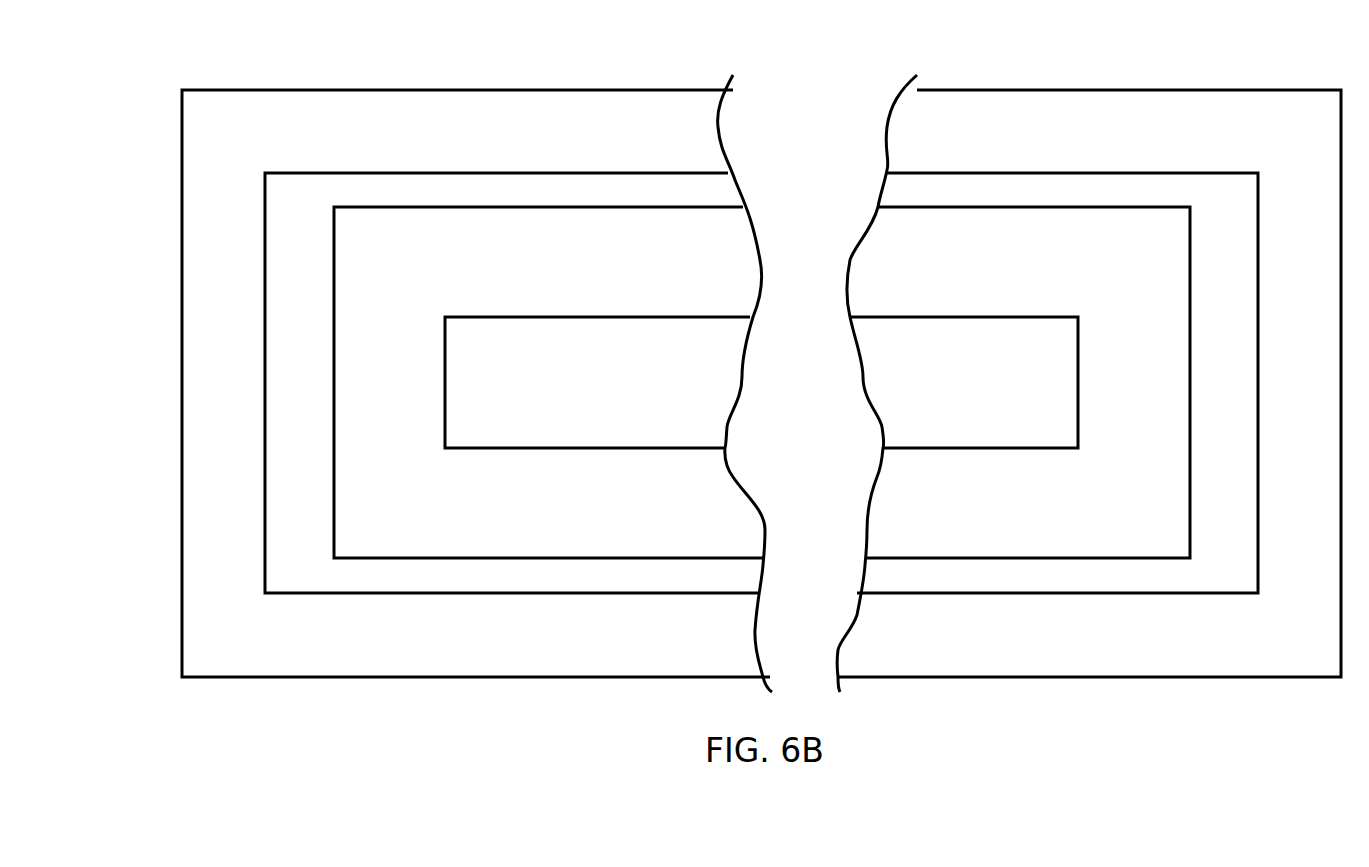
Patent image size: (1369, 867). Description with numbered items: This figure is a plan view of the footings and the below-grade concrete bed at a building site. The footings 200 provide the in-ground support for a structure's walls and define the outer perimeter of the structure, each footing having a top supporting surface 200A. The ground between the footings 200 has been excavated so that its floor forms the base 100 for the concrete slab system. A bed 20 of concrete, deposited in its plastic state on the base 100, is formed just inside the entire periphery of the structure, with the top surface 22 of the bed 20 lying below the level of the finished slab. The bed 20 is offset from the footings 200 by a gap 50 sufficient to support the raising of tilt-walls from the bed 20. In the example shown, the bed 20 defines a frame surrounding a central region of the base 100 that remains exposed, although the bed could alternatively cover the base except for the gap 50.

The bed 20 is at (545, 207).
The top surface 22 is at (404, 399).
The gap 50 is at (418, 183).
The base 100 is at (322, 399).
The footing 200 is at (283, 88).
The top supporting surface 200A is at (256, 399).